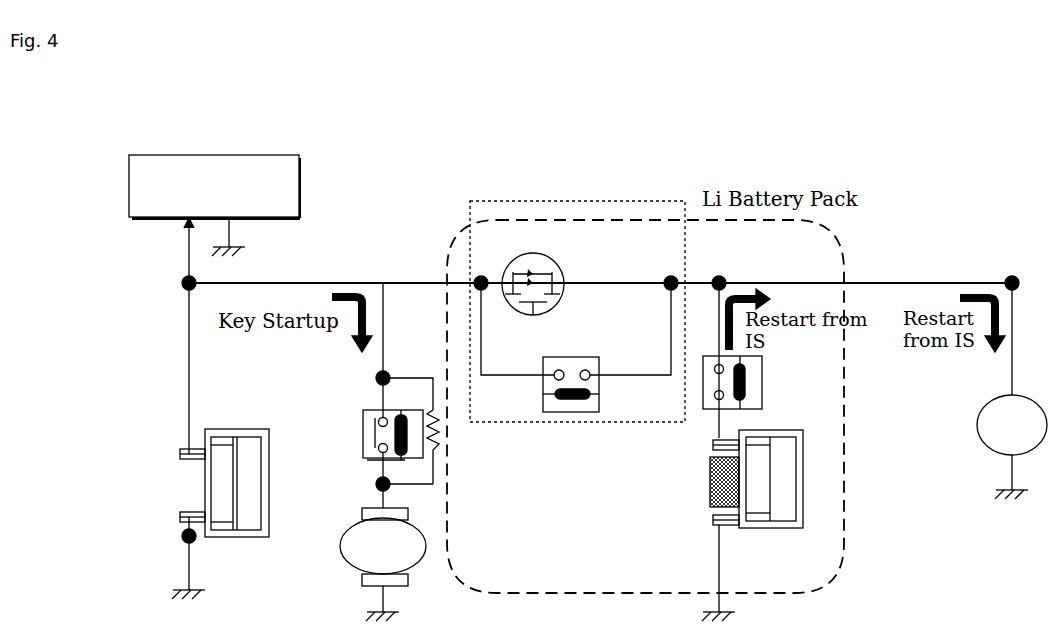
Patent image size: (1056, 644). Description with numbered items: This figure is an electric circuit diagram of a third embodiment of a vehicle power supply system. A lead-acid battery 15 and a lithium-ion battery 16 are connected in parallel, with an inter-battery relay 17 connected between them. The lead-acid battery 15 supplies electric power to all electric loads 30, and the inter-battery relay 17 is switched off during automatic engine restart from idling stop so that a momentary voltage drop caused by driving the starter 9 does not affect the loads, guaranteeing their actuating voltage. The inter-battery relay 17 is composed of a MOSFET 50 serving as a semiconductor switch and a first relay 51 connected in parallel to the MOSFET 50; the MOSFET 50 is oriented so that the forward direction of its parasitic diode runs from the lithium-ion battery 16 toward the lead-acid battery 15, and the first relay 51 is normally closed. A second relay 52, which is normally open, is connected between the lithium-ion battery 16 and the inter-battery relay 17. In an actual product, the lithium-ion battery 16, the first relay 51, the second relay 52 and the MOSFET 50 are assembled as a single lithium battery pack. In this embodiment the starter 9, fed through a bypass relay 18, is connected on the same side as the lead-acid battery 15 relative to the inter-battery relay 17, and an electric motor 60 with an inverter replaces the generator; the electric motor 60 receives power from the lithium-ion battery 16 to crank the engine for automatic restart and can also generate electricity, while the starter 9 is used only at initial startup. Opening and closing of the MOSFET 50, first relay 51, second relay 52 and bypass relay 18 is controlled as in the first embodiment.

The all electric loads 30 is at (227, 155).
The lead-acid battery 15 is at (258, 429).
The bypass relay 18 is at (364, 410).
The starter 9 is at (421, 566).
The inter-battery relay 17 is at (530, 201).
The MOSFET 50 is at (548, 253).
The first relay 51 is at (553, 412).
The second relay 52 is at (762, 402).
The lithium-ion battery 16 is at (710, 497).
The electric motor 60 is at (1034, 400).